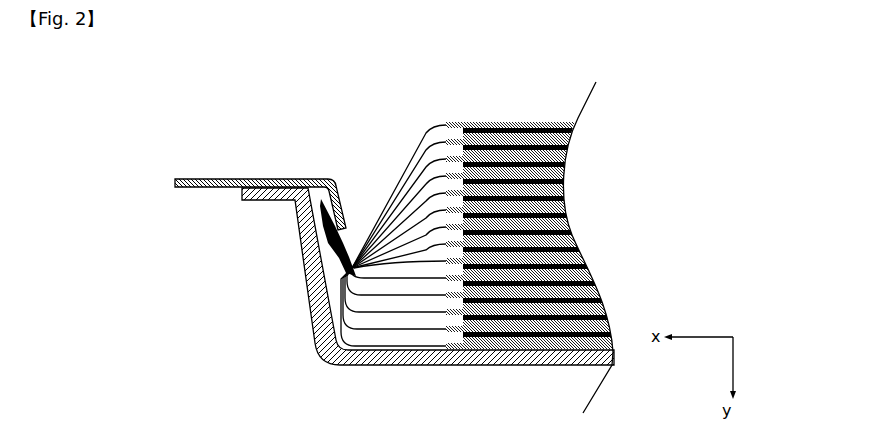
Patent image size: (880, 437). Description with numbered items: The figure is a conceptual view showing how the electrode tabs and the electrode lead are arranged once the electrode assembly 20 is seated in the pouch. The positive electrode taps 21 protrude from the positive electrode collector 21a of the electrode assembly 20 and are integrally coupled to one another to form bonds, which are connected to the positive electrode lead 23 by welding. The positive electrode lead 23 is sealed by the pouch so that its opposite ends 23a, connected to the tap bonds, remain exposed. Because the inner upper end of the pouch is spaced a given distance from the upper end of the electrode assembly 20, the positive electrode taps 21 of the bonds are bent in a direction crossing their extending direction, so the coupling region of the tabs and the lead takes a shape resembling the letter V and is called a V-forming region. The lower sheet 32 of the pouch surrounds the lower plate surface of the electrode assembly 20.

The electrode assembly 20 is at (512, 102).
The positive electrode taps 21 is at (333, 256).
The positive electrode collector 21a is at (447, 357).
The positive electrode lead 23 is at (212, 178).
The opposite ends of positive electrode lead 23a is at (175, 184).
The lower sheet 32 is at (482, 360).